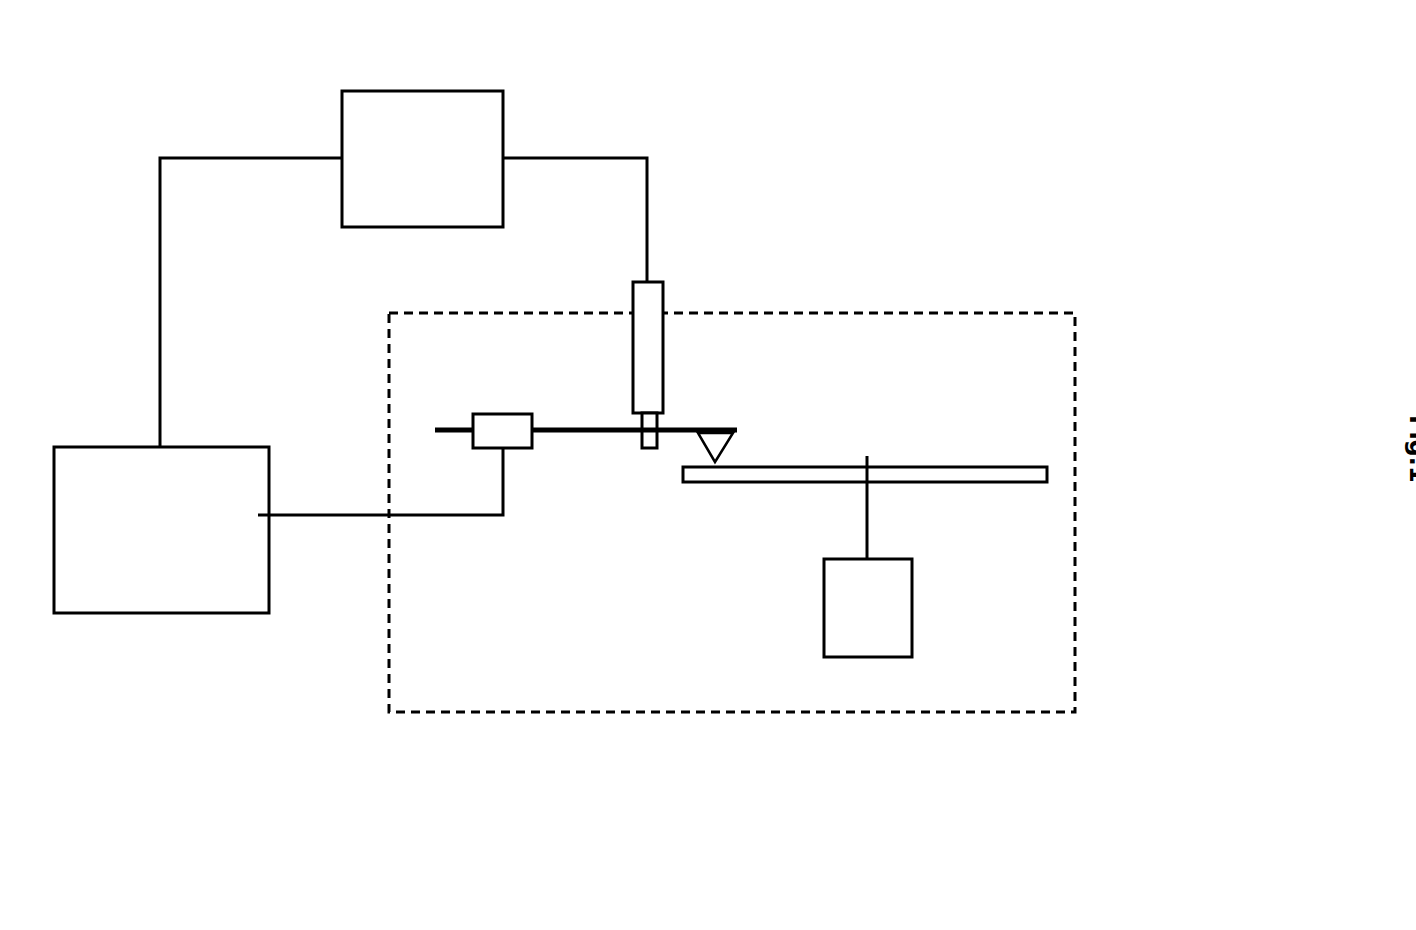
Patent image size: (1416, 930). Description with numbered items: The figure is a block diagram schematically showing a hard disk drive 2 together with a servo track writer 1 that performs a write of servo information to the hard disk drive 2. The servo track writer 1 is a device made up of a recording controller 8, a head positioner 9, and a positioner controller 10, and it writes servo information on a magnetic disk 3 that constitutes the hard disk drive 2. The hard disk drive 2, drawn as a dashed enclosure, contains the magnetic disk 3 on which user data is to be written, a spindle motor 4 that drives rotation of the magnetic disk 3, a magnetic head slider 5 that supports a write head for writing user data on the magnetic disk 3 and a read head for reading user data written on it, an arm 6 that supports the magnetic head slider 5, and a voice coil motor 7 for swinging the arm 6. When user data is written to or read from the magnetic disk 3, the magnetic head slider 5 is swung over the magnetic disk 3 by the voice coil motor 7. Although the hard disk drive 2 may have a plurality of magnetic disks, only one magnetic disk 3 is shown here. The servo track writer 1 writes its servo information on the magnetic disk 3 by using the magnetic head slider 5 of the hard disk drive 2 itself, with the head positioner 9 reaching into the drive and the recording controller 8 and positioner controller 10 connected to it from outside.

The servo track writer 1 is at (226, 110).
The hard disk drive 2 is at (806, 283).
The magnetic disk 3 is at (935, 467).
The spindle motor 4 is at (912, 614).
The magnetic head slider 5 is at (735, 438).
The arm 6 is at (560, 428).
The voice coil motor 7 is at (520, 448).
The recording controller 8 is at (269, 473).
The head positioner 9 is at (663, 300).
The positioner controller 10 is at (433, 91).